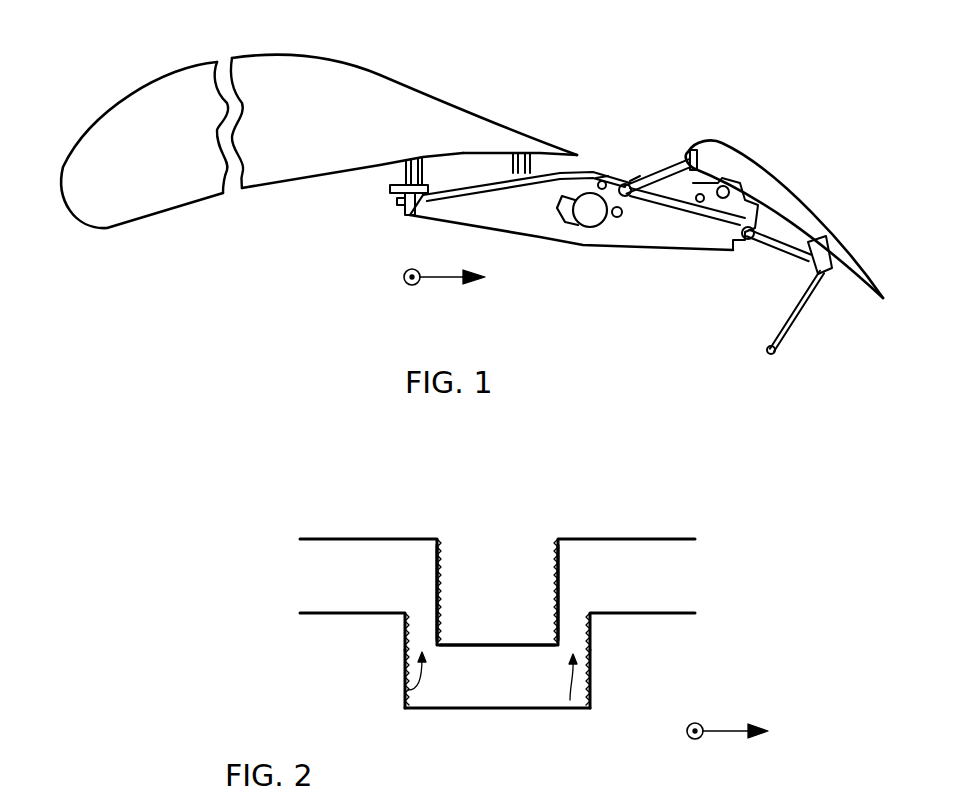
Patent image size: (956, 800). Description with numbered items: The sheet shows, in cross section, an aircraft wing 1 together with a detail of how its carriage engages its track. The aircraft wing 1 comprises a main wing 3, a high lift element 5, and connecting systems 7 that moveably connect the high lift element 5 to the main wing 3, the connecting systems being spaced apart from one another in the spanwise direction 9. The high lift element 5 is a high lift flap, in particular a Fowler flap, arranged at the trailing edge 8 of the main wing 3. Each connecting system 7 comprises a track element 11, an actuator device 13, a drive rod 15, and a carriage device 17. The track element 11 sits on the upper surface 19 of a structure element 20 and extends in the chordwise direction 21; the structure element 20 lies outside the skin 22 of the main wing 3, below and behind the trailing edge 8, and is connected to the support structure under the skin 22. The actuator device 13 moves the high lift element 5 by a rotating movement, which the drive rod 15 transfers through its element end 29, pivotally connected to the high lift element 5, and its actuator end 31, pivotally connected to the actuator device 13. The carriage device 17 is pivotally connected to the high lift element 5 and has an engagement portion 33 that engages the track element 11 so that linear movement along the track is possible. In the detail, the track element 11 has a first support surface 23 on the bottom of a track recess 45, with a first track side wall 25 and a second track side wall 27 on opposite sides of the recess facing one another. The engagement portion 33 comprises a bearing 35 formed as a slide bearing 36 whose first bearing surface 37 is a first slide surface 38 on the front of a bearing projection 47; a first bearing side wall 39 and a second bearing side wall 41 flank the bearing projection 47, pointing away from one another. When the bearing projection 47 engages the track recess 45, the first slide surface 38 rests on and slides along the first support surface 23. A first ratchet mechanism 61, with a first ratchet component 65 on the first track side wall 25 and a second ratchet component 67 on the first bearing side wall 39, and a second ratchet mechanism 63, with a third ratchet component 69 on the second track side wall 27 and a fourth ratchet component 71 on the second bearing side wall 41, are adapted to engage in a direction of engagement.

In FIG. 1, the aircraft wing 1 is at (800, 102).
In FIG. 1, the main wing 3 is at (415, 92).
In FIG. 1, the high lift element 5 is at (733, 152).
In FIG. 1, the connecting system 7 is at (636, 168).
In FIG. 1, the trailing edge 8 is at (567, 153).
In FIG. 1, the spanwise direction 9 is at (404, 277).
In FIG. 2, the spanwise direction 9 is at (727, 729).
In FIG. 1, the track element 11 is at (665, 197).
In FIG. 2, the track element 11 is at (677, 698).
In FIG. 1, the actuator device 13 is at (583, 222).
In FIG. 1, the drive rod 15 is at (655, 170).
In FIG. 1, the carriage device 17 is at (745, 195).
In FIG. 1, the upper surface 19 is at (603, 168).
In FIG. 1, the structure element 20 is at (527, 222).
In FIG. 1, the chordwise direction 21 is at (440, 280).
In FIG. 2, the chordwise direction 21 is at (687, 731).
In FIG. 1, the skin 22 is at (330, 58).
In FIG. 2, the first support surface 23 is at (525, 710).
In FIG. 2, the first track side wall 25 is at (403, 667).
In FIG. 2, the second track side wall 27 is at (592, 668).
In FIG. 1, the element end 29 is at (687, 160).
In FIG. 1, the actuator end 31 is at (633, 196).
In FIG. 1, the engagement portion 33 is at (762, 266).
In FIG. 2, the engagement portion 33 is at (497, 578).
In FIG. 1, the bearing 35 is at (762, 266).
In FIG. 2, the bearing 35 is at (497, 578).
In FIG. 1, the slide bearing 36 is at (727, 250).
In FIG. 2, the slide bearing 36 is at (545, 537).
In FIG. 2, the first bearing surface 37 is at (497, 609).
In FIG. 2, the first slide surface 38 is at (458, 645).
In FIG. 2, the first bearing side wall 39 is at (432, 578).
In FIG. 2, the second bearing side wall 41 is at (562, 587).
In FIG. 2, the track recess 45 is at (510, 700).
In FIG. 2, the bearing projection 47 is at (510, 636).
In FIG. 2, the first ratchet mechanism 61 is at (405, 690).
In FIG. 2, the second ratchet mechanism 63 is at (571, 708).
In FIG. 2, the first ratchet component 65 is at (403, 637).
In FIG. 2, the second ratchet component 67 is at (437, 620).
In FIG. 2, the third ratchet component 69 is at (558, 618).
In FIG. 2, the fourth ratchet component 71 is at (592, 637).